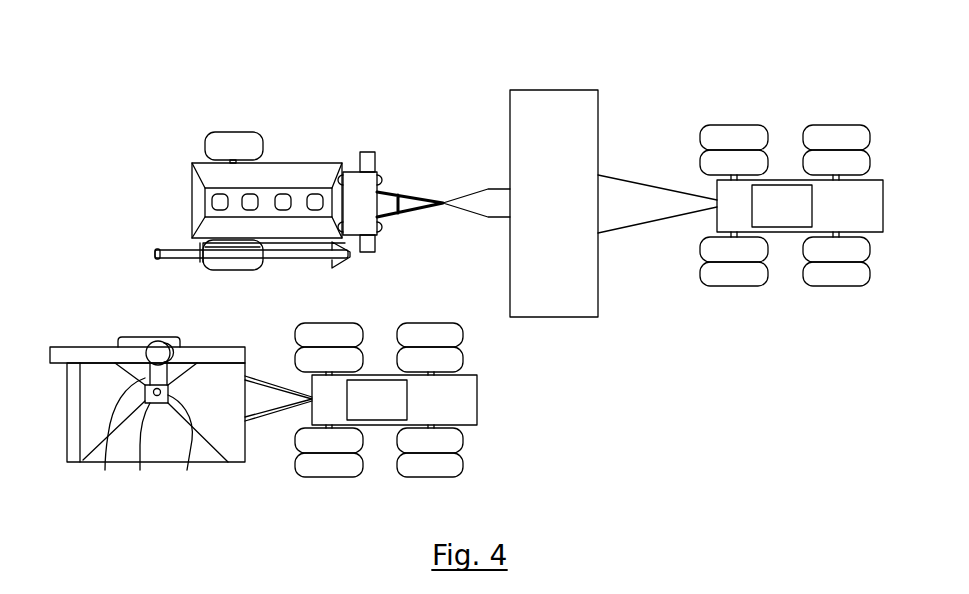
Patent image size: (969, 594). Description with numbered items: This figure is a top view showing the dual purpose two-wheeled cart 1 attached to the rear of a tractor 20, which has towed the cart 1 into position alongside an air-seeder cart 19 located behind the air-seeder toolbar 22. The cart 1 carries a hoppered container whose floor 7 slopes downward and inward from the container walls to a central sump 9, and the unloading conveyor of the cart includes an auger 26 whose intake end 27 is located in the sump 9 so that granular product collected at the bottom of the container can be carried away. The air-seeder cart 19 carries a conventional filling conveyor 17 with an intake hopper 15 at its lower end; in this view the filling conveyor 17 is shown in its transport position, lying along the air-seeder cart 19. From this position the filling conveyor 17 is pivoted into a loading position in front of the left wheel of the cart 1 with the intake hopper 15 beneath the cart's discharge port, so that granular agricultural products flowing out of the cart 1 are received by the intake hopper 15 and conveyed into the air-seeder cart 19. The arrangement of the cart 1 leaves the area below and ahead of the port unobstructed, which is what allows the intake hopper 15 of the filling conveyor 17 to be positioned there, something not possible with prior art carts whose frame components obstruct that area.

The dual purpose two-wheeled cart 1 is at (238, 470).
The floor 7 is at (178, 445).
The central sump 9 is at (187, 470).
The intake hopper 15 is at (345, 262).
The filling conveyor 17 is at (178, 258).
The air-seeder cart 19 is at (280, 163).
The tractor 20 is at (477, 392).
The air-seeder toolbar 22 is at (598, 300).
The auger 26 is at (105, 470).
The intake end 27 is at (140, 470).